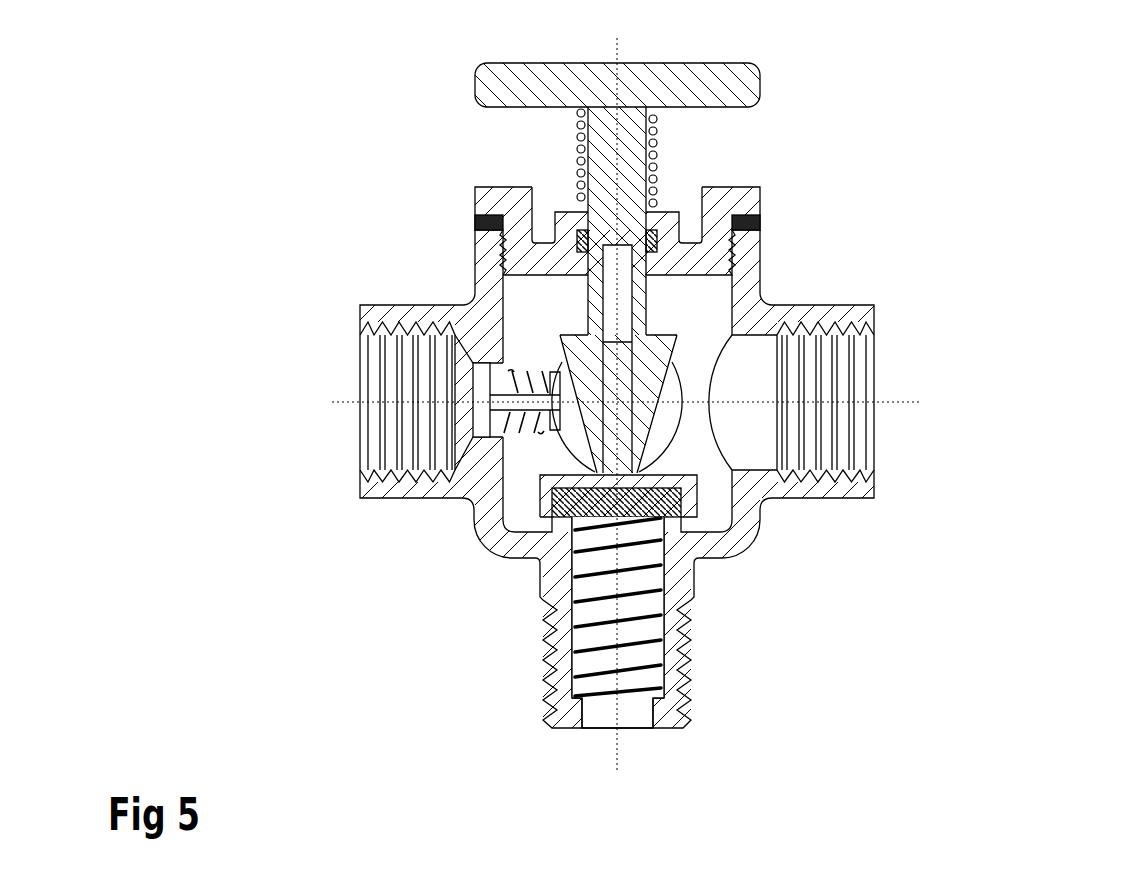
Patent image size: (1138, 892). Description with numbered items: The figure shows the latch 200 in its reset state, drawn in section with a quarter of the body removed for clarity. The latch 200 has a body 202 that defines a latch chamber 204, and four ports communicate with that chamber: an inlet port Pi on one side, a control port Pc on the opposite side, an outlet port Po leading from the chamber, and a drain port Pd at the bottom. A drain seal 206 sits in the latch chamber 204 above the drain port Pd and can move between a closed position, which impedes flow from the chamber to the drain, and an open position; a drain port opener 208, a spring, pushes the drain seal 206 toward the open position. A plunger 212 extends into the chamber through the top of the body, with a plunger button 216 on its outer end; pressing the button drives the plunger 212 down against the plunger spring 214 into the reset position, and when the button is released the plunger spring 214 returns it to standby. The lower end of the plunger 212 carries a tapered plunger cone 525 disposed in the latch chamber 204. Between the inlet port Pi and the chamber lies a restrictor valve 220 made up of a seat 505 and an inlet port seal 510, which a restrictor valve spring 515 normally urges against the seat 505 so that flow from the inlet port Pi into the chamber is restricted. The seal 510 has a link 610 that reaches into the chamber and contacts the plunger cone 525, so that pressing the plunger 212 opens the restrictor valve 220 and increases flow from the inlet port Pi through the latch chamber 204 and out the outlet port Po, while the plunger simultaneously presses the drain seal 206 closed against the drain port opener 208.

The latch 200 is at (723, 203).
The body 202 is at (770, 273).
The latch chamber 204 is at (698, 465).
The drain seal 206 is at (640, 508).
The drain port opener 208 is at (630, 647).
The plunger 212 is at (597, 168).
The plunger spring 214 is at (570, 137).
The plunger button 216 is at (692, 62).
The restrictor valve 220 is at (460, 408).
The seat 505 is at (488, 357).
The inlet port seal 510 is at (490, 372).
The restrictor valve spring 515 is at (513, 452).
The plunger cone 525 is at (678, 360).
The link 610 is at (518, 444).
The inlet port Pi is at (310, 400).
The control port Pc is at (926, 398).
The outlet port Po is at (673, 425).
The drain port Pd is at (613, 740).